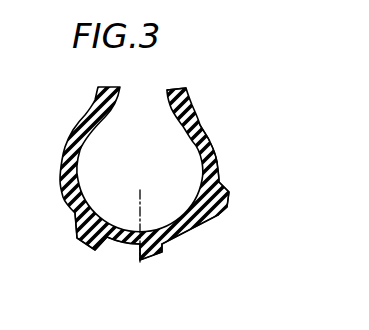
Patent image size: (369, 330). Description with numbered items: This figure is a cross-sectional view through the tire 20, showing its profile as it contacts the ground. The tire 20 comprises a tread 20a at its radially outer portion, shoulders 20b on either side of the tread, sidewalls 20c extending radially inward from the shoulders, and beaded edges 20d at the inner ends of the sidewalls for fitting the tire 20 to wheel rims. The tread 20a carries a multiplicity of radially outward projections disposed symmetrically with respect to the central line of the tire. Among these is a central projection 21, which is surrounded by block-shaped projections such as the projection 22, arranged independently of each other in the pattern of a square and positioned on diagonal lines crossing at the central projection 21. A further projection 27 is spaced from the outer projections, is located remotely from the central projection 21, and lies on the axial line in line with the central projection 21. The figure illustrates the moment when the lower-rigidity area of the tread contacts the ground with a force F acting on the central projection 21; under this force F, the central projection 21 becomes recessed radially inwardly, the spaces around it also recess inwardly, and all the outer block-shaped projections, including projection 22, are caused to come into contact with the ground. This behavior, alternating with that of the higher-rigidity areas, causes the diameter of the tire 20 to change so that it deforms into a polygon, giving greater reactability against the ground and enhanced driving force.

The tire 20 is at (262, 120).
The tread 20a is at (201, 220).
The shoulders 20b is at (219, 173).
The sidewalls 20c is at (213, 141).
The beaded edges 20d is at (184, 90).
The central projection 21 is at (162, 251).
The block-shaped projection 22 is at (83, 240).
The projection 27 is at (229, 209).
The force F is at (140, 275).